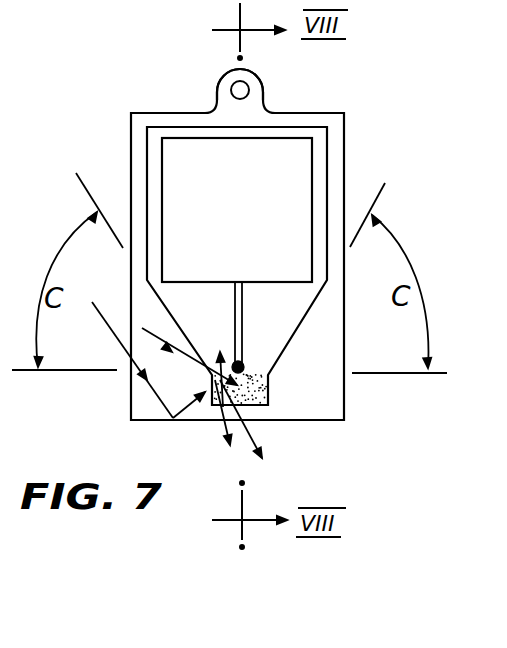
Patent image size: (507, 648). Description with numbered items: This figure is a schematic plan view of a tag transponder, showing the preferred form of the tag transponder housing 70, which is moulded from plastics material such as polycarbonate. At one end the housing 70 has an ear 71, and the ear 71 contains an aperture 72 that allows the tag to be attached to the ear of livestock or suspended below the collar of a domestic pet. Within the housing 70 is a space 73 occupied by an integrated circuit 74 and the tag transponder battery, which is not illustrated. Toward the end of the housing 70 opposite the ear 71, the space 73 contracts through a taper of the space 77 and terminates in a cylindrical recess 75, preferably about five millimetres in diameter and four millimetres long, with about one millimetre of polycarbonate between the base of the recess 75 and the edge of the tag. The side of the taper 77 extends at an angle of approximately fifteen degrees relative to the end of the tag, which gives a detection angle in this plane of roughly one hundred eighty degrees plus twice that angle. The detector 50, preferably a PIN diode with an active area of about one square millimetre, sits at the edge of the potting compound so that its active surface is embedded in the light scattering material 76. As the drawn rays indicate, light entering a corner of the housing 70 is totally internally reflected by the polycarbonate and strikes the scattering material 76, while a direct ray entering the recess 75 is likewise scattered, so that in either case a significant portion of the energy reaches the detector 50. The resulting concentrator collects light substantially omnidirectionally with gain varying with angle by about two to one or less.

The detector 50 is at (250, 361).
The tag transponder housing 70 is at (362, 114).
The ear 71 is at (225, 90).
The aperture 72 is at (245, 90).
The space 73 is at (155, 138).
The integrated circuit 74 is at (237, 210).
The cylindrical recess 75 is at (275, 390).
The light scattering material 76 is at (258, 407).
The taper of the space 77 is at (213, 322).